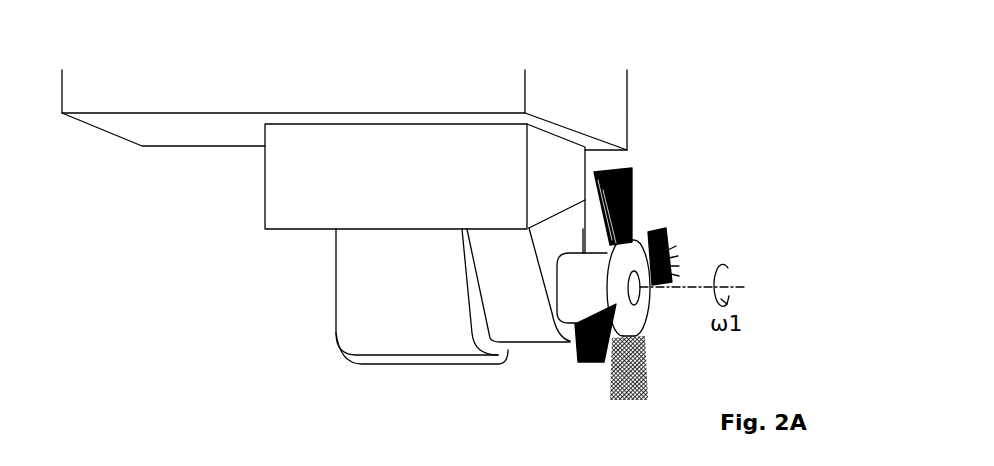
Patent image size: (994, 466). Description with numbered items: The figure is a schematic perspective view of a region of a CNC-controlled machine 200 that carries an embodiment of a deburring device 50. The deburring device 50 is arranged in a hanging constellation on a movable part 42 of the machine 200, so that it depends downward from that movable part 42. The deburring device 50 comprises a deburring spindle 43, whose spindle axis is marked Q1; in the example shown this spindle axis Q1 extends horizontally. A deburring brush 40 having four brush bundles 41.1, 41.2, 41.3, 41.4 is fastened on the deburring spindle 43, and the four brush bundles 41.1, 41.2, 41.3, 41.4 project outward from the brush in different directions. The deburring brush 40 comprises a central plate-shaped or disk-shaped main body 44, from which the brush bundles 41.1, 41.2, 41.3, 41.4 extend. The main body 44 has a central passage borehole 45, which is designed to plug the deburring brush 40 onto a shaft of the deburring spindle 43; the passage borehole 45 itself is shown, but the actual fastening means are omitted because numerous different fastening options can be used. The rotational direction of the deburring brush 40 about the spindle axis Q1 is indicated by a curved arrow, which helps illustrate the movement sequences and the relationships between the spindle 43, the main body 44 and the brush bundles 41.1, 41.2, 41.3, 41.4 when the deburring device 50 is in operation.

The CNC-controlled machine 200 is at (68, 32).
The movable part 42 is at (607, 90).
The deburring device 50 is at (288, 342).
The deburring spindle 43 is at (572, 292).
The main body 44 is at (609, 268).
The central passage borehole 45 is at (641, 298).
The brush bundle 41.1 is at (632, 165).
The brush bundle 41.2 is at (667, 250).
The brush bundle 41.3 is at (612, 388).
The brush bundle 41.4 is at (578, 350).
The deburring brush 40 is at (672, 205).
The spindle axis Q1 is at (710, 292).